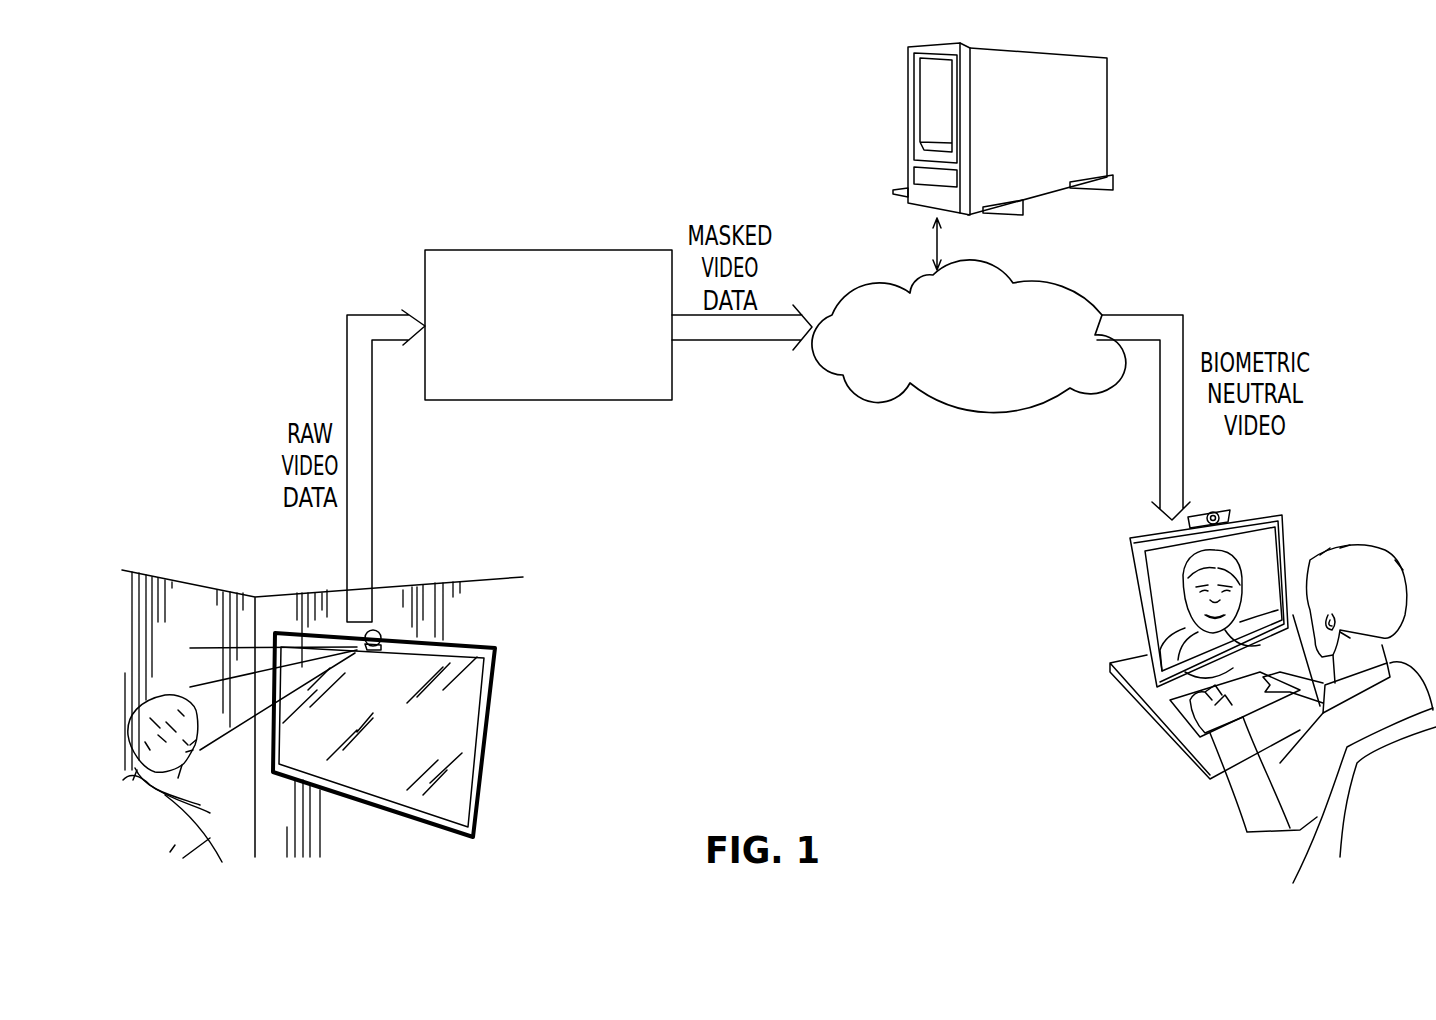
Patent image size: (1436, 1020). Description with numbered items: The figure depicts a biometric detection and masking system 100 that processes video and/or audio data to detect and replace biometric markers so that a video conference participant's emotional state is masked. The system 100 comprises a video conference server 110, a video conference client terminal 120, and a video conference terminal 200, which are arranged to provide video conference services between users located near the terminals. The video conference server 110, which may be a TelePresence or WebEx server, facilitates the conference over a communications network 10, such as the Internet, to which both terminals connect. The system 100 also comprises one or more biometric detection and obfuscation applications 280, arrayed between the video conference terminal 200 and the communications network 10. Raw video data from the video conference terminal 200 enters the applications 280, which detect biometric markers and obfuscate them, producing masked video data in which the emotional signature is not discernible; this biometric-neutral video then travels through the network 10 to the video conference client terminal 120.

The biometric detection and masking system 100 is at (1250, 98).
The video conference server 110 is at (908, 105).
The communications network 10 is at (1070, 283).
The biometric detection and obfuscation application(s) 280 is at (558, 250).
The video conference terminal 200 is at (487, 648).
The video conference client terminal 120 is at (1264, 512).